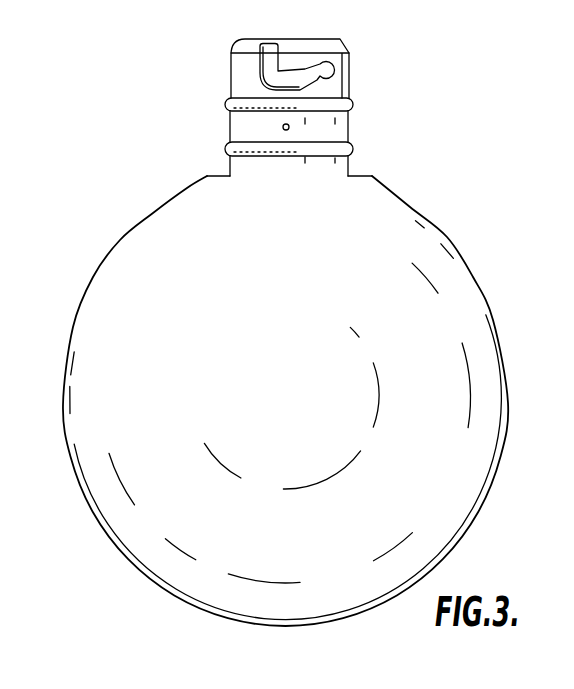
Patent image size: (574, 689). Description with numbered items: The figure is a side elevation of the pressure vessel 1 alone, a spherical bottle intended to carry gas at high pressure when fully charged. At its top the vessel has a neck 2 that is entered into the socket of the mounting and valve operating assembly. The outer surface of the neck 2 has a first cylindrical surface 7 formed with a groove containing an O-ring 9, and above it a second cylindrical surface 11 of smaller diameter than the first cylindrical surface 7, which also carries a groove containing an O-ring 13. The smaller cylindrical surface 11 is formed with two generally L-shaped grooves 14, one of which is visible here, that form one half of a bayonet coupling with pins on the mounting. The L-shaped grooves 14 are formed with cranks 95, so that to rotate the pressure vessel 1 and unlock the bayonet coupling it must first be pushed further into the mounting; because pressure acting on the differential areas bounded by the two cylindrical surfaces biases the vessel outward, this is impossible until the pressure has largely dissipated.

The pressure vessel 1 is at (110, 290).
The neck 2 is at (300, 120).
The first cylindrical surface 7 is at (230, 163).
The O-ring 9 is at (353, 153).
The second cylindrical surface 11 is at (230, 124).
The O-ring 13 is at (352, 105).
The L-shaped grooves 14 is at (262, 67).
The cranks 95 is at (313, 57).